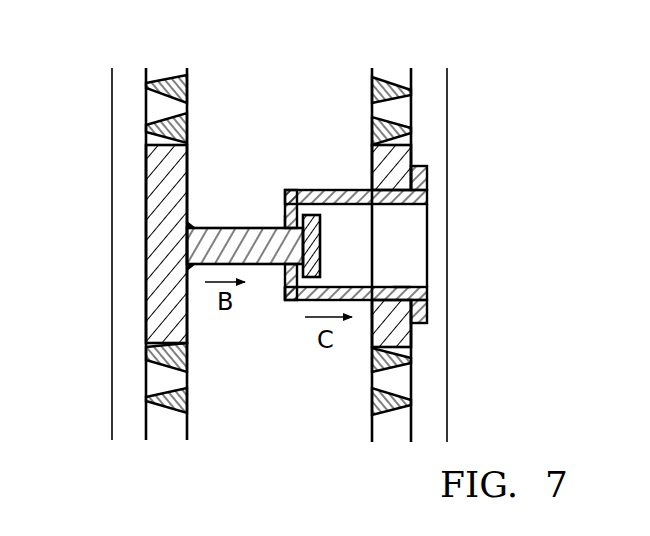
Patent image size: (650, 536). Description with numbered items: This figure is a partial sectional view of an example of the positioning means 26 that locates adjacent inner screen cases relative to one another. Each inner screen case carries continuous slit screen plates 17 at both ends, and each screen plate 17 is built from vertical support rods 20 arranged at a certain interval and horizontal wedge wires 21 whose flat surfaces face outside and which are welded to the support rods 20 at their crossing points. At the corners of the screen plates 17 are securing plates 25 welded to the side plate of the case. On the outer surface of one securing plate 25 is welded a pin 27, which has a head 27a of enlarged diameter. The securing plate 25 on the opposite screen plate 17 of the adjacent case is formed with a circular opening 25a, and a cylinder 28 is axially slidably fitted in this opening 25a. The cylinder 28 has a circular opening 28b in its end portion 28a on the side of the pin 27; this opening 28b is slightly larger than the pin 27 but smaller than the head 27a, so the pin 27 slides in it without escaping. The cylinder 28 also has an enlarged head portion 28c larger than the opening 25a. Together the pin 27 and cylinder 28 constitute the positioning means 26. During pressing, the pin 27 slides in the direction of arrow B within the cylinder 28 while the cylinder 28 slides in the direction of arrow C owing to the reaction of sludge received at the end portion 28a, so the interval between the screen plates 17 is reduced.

The continuous slit screen plate 17 is at (196, 405).
The support rod 20 is at (127, 180).
The wedge wire 21 is at (178, 88).
The securing plate 25 is at (158, 315).
The circular opening 25a is at (393, 290).
The positioning means 26 is at (331, 172).
The pin 27 is at (247, 237).
The head 27a is at (316, 243).
The cylinder 28 is at (300, 302).
The end portion 28a is at (285, 287).
The circular opening 28b is at (284, 226).
The enlarged head portion 28c is at (427, 176).